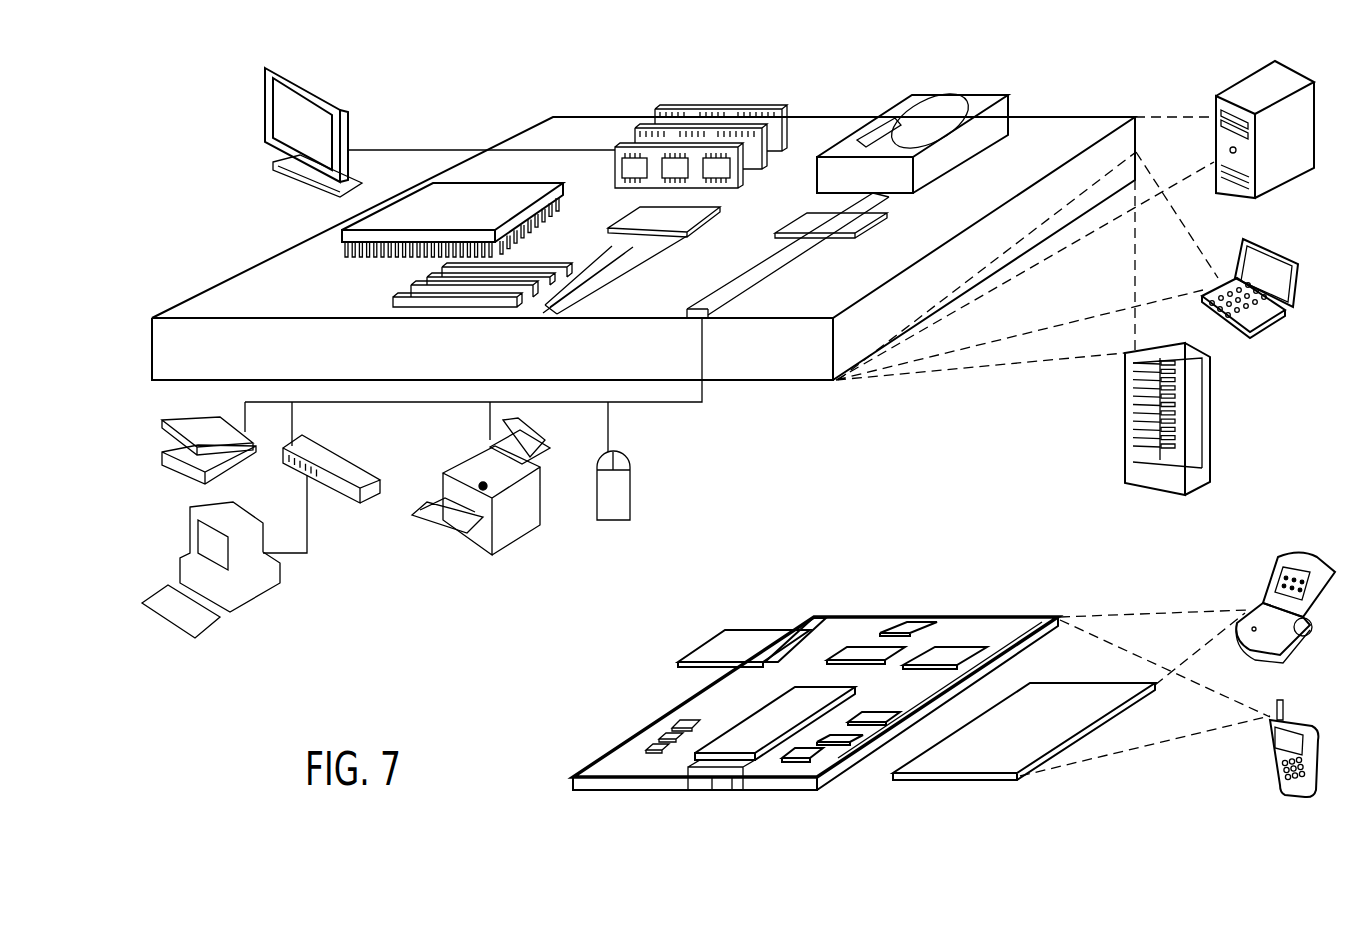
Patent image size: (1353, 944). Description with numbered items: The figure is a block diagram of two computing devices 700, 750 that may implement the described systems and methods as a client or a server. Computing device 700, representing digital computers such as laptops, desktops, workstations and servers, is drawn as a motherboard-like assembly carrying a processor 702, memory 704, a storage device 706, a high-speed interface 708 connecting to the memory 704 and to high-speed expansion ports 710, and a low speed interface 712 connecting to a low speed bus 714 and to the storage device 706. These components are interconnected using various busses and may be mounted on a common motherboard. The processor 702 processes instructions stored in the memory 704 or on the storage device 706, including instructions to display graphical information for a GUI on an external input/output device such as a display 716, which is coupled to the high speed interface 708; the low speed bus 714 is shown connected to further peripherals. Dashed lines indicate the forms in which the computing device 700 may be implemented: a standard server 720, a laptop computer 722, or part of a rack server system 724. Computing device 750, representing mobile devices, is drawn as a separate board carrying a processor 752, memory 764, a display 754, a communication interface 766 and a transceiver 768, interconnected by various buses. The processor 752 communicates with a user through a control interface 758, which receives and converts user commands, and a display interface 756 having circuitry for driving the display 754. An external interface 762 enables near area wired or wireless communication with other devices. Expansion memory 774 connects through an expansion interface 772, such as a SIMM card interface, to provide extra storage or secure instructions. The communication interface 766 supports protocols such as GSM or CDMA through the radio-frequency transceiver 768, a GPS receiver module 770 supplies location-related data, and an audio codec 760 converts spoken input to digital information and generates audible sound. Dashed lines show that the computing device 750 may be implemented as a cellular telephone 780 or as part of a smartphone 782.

The computing device 700 is at (463, 90).
The processor 702 is at (342, 242).
The memory 704 is at (667, 108).
The storage device 706 is at (902, 97).
The high-speed interface 708 is at (640, 205).
The high-speed expansion ports 710 is at (413, 284).
The low speed interface 712 is at (830, 220).
The low speed bus 714 is at (710, 319).
The display 716 is at (266, 72).
The standard server 720 is at (1216, 100).
The laptop computer 722 is at (1250, 243).
The rack server system 724 is at (1125, 445).
The computing device 750 is at (794, 590).
The processor 752 is at (753, 770).
The display 754 is at (1017, 778).
The display interface 756 is at (822, 780).
The control interface 758 is at (855, 748).
The audio codec 760 is at (913, 745).
The external interface 762 is at (712, 780).
The memory 764 is at (667, 738).
The communication interface 766 is at (863, 650).
The transceiver 768 is at (945, 656).
The GPS receiver module 770 is at (918, 622).
The expansion interface 772 is at (800, 627).
The expansion memory 774 is at (723, 630).
The cellular telephone 780 is at (1288, 557).
The smartphone 782 is at (1277, 697).